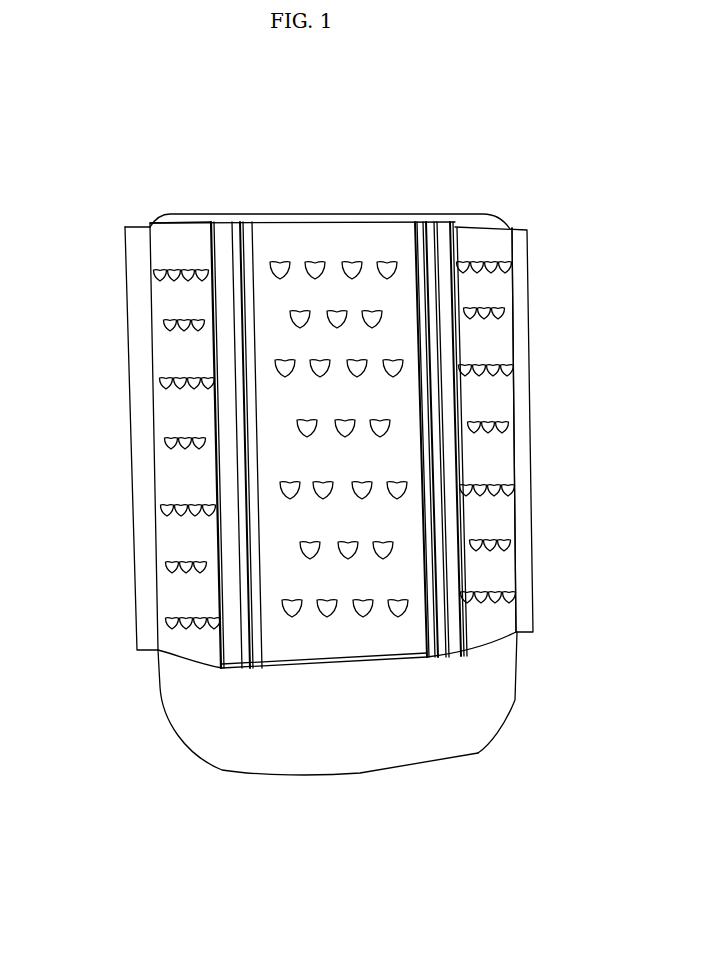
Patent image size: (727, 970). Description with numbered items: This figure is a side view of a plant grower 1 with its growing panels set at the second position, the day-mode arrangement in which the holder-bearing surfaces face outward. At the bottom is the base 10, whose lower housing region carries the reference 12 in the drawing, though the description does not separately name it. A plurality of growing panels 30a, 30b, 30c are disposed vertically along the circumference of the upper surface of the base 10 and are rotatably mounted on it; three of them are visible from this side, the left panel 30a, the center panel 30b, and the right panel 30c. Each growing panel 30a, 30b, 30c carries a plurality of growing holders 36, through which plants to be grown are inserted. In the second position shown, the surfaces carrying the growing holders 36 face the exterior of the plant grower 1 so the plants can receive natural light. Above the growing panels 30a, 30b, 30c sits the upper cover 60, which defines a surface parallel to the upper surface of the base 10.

The plant grower 1 is at (118, 212).
The base 10 is at (408, 698).
The housing wall 12 is at (487, 702).
The growing panel 30a is at (167, 360).
The growing panel 30b is at (278, 530).
The growing panel 30c is at (488, 344).
The growing holder 36 is at (352, 262).
The upper cover 60 is at (327, 216).